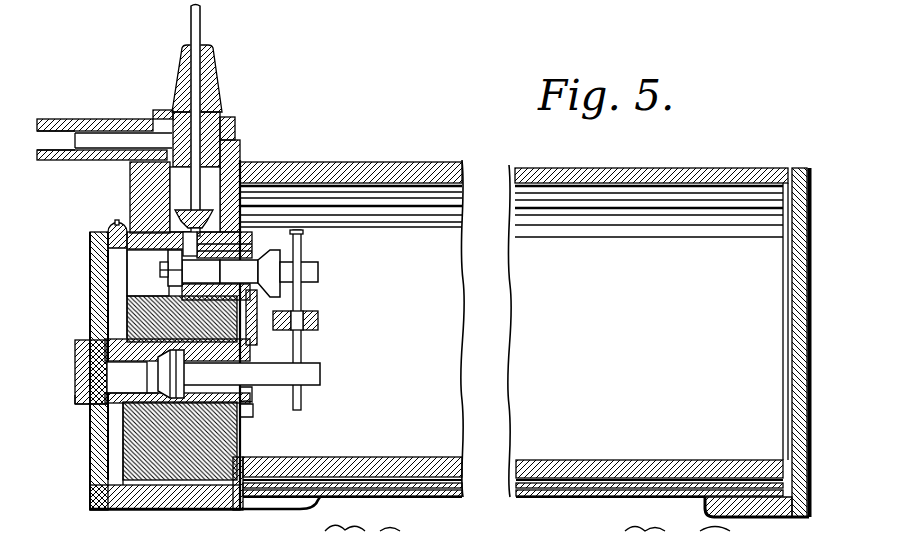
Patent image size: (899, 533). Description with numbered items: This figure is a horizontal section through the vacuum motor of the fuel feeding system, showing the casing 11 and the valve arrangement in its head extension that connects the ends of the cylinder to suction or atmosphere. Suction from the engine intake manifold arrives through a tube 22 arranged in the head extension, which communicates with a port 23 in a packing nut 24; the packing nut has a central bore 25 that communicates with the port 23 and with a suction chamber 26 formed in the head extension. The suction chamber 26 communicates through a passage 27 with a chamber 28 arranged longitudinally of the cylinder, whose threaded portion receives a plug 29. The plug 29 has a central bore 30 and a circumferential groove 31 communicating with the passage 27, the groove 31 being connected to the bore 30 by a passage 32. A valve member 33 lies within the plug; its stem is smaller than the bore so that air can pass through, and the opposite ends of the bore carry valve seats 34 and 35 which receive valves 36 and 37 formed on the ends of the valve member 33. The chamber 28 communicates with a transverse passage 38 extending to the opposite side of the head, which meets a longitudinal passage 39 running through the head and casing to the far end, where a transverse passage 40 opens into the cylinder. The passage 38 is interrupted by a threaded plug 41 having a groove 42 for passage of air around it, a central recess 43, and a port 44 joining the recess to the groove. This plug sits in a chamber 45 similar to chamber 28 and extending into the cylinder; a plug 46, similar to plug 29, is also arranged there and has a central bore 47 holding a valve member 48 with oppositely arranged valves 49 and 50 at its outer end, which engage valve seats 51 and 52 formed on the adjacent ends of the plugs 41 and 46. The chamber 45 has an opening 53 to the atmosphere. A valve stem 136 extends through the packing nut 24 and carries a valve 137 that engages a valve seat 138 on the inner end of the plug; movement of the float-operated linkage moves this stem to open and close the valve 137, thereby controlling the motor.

The casing 11 is at (453, 168).
The tube 22 is at (95, 131).
The port 23 is at (163, 110).
The packing nut 24 is at (214, 70).
The central bore 25 is at (232, 128).
The suction chamber 26 is at (198, 118).
The passage 27 is at (256, 178).
The chamber 28 is at (173, 231).
The plug 29 is at (262, 238).
The central bore 30 is at (272, 243).
The circumferential groove 31 is at (238, 316).
The passage 32 is at (201, 271).
The valve member 33 is at (236, 271).
The valve seat 34 is at (168, 262).
The valve seat 35 is at (299, 240).
The valve 36 is at (167, 281).
The valve 37 is at (292, 266).
The transverse passage 38 is at (120, 318).
The longitudinal passage 39 is at (166, 484).
The transverse passage 40 is at (783, 470).
The threaded plug 41 is at (95, 371).
The groove 42 is at (82, 409).
The central recess 43 is at (85, 389).
The port 44 is at (103, 356).
The chamber 45 is at (157, 397).
The plug 46 is at (243, 415).
The central bore 47 is at (250, 388).
The valve member 48 is at (251, 374).
The valve 49 is at (167, 388).
The valve 50 is at (183, 370).
The valve seat 51 is at (147, 394).
The valve seat 52 is at (275, 323).
The opening 53 is at (127, 377).
The valve stem 136 is at (198, 112).
The valve 137 is at (183, 214).
The valve seat 138 is at (240, 152).